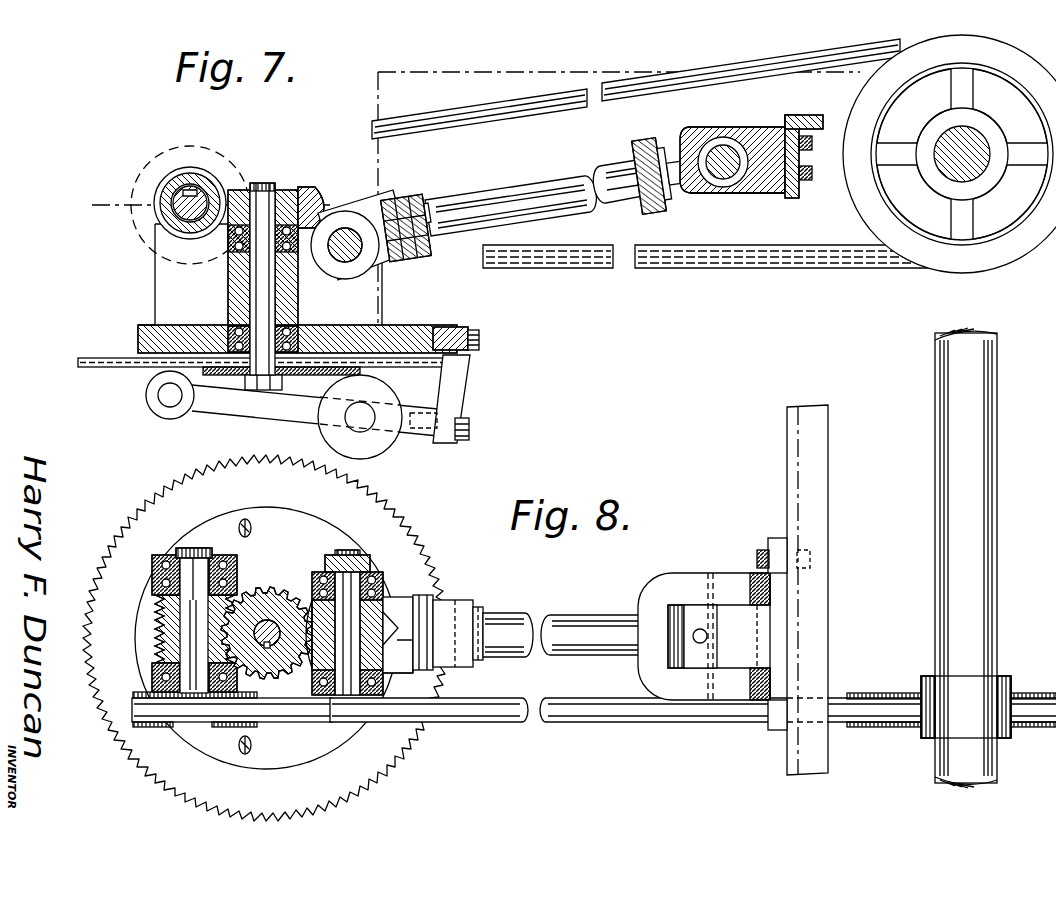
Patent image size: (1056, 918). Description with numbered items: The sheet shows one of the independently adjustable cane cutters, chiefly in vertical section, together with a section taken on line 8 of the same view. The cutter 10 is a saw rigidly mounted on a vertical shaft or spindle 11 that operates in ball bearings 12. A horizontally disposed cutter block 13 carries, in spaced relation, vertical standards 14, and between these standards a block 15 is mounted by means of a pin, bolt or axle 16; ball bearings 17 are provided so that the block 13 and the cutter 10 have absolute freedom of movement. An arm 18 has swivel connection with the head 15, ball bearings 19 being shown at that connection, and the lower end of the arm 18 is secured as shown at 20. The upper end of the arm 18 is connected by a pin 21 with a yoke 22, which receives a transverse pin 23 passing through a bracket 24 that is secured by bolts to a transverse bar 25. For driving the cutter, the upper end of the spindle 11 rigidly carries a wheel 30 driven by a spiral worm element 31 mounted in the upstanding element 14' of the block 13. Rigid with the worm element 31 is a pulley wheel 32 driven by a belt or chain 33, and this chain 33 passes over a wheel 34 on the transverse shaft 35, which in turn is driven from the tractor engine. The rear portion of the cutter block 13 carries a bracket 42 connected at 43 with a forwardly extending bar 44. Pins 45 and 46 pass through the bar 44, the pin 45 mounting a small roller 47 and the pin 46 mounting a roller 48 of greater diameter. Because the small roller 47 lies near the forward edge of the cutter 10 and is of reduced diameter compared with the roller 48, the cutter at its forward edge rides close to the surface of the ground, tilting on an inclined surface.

In FIG. 7, the section line 8 is at (102, 207).
In FIG. 7, the cutter 10 is at (100, 360).
In FIG. 8, the cutter 10 is at (392, 510).
In FIG. 7, the vertical shaft or spindle 11 is at (258, 293).
In FIG. 8, the vertical shaft or spindle 11 is at (302, 585).
In FIG. 7, the ball bearing 12 is at (324, 200).
In FIG. 7, the cutter block 13 is at (440, 323).
In FIG. 8, the cutter block 13 is at (280, 755).
In FIG. 7, the vertical standard 14 is at (367, 268).
In FIG. 8, the vertical standard 14 is at (331, 640).
In FIG. 7, the upstanding element 14' is at (160, 274).
In FIG. 7, the block or head 15 is at (383, 193).
In FIG. 8, the block or head 15 is at (412, 675).
In FIG. 7, the pin, bolt or axle 16 is at (348, 228).
In FIG. 8, the pin, bolt or axle 16 is at (368, 570).
In FIG. 8, the ball bearing 17 is at (380, 584).
In FIG. 7, the arm 18 is at (555, 180).
In FIG. 8, the arm 18 is at (581, 614).
In FIG. 7, the ball bearing 19 is at (432, 203).
In FIG. 7, the arm lower end securement 20 is at (403, 262).
In FIG. 8, the arm lower end securement 20 is at (422, 593).
In FIG. 7, the pin 21 is at (655, 138).
In FIG. 8, the pin 21 is at (628, 656).
In FIG. 7, the yoke 22 is at (684, 145).
In FIG. 8, the yoke 22 is at (687, 567).
In FIG. 7, the transverse pin 23 is at (737, 132).
In FIG. 8, the transverse pin 23 is at (704, 596).
In FIG. 7, the bracket 24 is at (728, 193).
In FIG. 8, the bracket 24 is at (767, 623).
In FIG. 7, the transverse bar 25 is at (799, 170).
In FIG. 8, the transverse bar 25 is at (815, 498).
In FIG. 7, the wheel 30 is at (292, 183).
In FIG. 8, the wheel 30 is at (267, 618).
In FIG. 7, the spiral element 31 is at (158, 183).
In FIG. 8, the spiral element 31 is at (160, 647).
In FIG. 7, the pulley wheel 32 is at (177, 155).
In FIG. 8, the pulley wheel 32 is at (188, 722).
In FIG. 7, the belt or chain 33 is at (503, 115).
In FIG. 8, the belt or chain 33 is at (493, 713).
In FIG. 7, the wheel 34 is at (872, 200).
In FIG. 7, the transverse shaft 35 is at (977, 162).
In FIG. 8, the transverse shaft 35 is at (984, 613).
In FIG. 7, the bracket 42 is at (459, 383).
In FIG. 8, the bracket 42 is at (472, 600).
In FIG. 7, the bracket connection 43 is at (458, 432).
In FIG. 7, the forwardly extending bar 44 is at (233, 405).
In FIG. 7, the pin 45 is at (170, 405).
In FIG. 7, the pin 46 is at (364, 410).
In FIG. 7, the roller 47 is at (147, 396).
In FIG. 7, the roller 48 is at (383, 447).